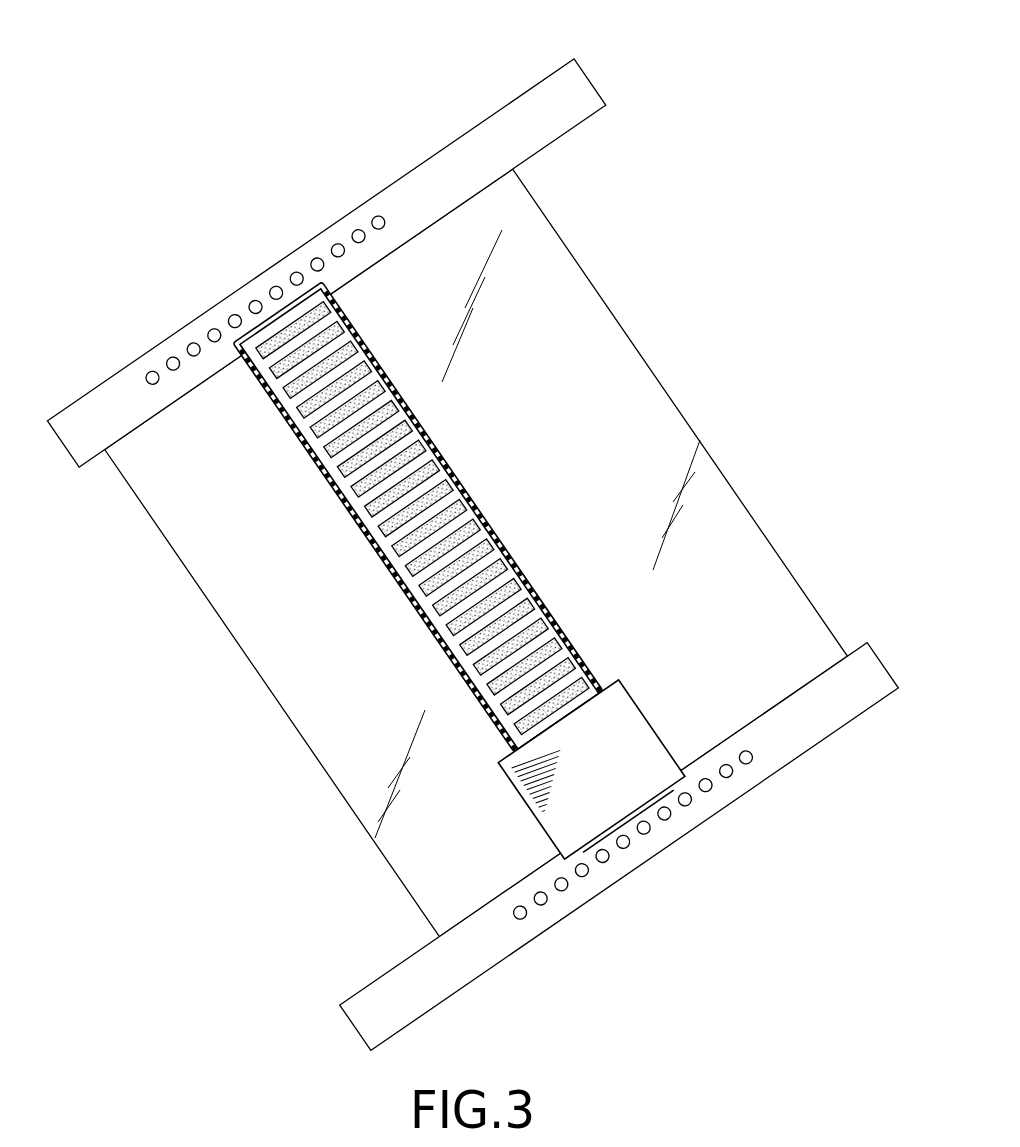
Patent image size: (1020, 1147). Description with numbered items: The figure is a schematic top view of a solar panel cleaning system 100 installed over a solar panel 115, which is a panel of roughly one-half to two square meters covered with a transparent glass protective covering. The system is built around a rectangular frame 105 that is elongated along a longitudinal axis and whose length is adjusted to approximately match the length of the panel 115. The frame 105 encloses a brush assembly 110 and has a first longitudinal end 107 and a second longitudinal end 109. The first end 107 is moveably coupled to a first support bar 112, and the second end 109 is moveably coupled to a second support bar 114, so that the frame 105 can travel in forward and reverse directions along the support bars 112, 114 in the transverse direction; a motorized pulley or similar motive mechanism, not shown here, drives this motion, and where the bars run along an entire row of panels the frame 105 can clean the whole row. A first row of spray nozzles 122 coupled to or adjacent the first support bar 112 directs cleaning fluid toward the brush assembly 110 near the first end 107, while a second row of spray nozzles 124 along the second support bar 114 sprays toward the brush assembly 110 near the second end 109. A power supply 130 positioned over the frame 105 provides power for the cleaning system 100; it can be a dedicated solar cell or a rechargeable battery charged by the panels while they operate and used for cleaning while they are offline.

The cleaning system 100 is at (221, 179).
The frame 105 is at (395, 457).
The first longitudinal end 107 is at (418, 517).
The brush assembly 110 is at (420, 622).
The first support bar 112 is at (326, 233).
The second support bar 114 is at (619, 847).
The solar panel 115 is at (653, 428).
The first row of spray nozzles 122 is at (152, 378).
The second row of spray nozzles 124 is at (520, 913).
The second longitudinal end 109 is at (664, 813).
The power supply 130 is at (650, 726).